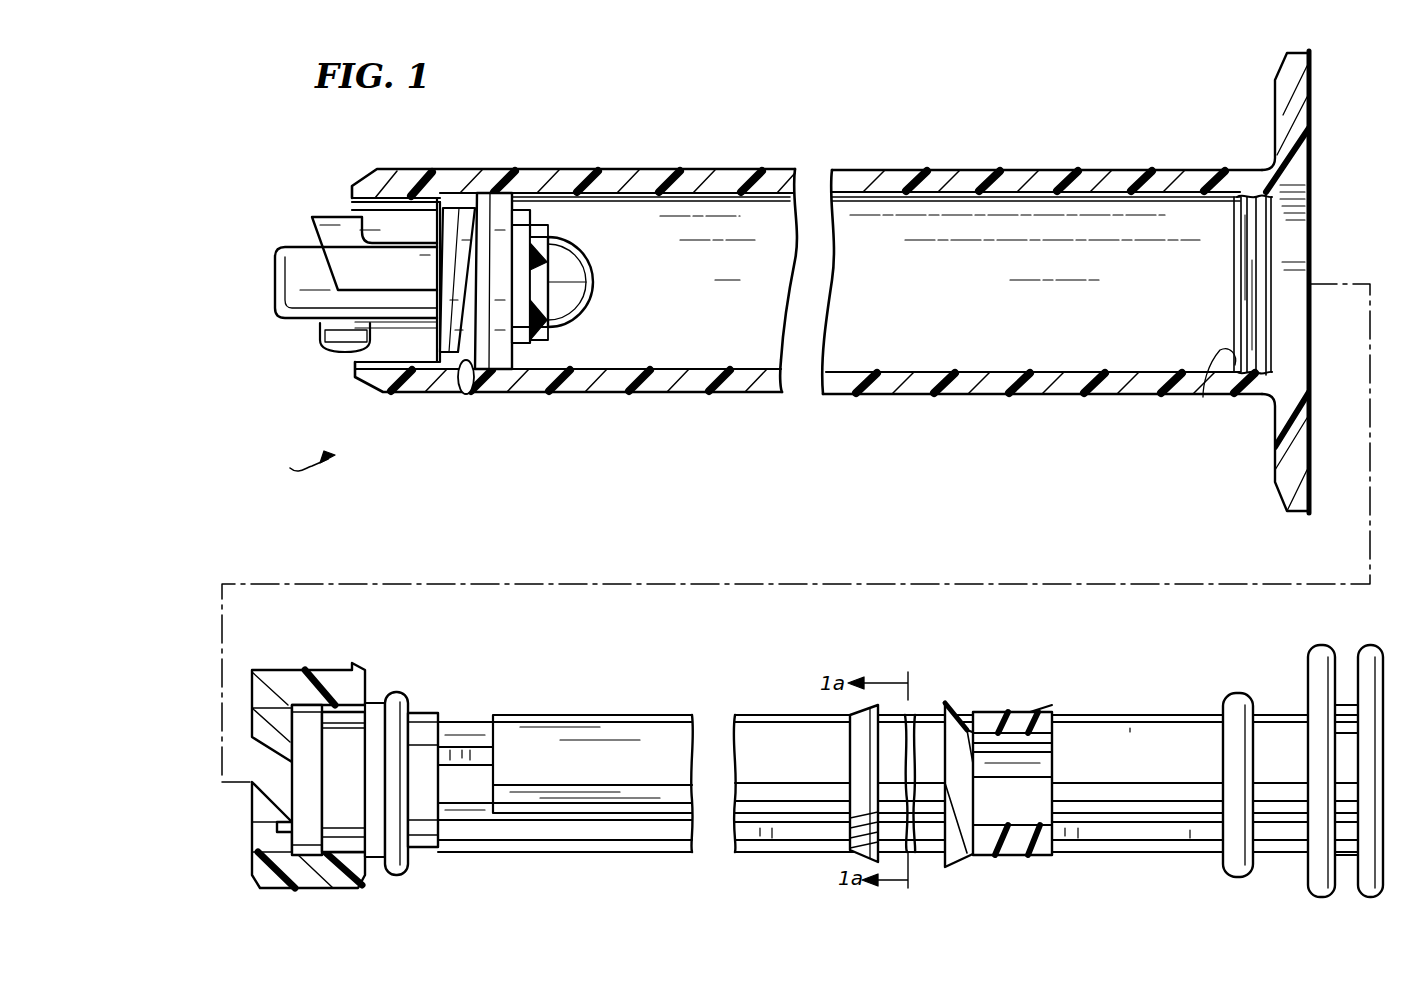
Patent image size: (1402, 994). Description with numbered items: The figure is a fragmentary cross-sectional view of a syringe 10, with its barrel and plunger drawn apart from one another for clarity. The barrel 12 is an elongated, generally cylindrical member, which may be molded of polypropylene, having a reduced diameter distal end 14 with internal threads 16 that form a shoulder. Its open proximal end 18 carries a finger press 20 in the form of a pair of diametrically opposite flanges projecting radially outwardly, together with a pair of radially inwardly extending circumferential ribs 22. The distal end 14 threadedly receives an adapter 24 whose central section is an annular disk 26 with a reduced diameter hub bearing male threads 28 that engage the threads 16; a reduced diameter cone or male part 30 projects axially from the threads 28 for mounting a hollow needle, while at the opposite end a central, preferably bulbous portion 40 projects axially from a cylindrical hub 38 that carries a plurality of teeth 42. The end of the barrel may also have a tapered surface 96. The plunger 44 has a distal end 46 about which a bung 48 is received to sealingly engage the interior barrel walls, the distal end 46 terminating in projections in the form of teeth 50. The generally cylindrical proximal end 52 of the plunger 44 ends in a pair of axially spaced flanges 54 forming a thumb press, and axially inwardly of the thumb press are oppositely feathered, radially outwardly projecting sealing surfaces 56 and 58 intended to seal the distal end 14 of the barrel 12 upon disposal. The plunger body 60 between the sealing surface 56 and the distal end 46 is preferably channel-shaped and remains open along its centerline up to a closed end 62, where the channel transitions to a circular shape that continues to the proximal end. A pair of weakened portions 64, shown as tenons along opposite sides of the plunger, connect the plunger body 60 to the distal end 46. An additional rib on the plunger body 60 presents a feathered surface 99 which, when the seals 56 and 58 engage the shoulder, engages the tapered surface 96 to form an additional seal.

The syringe 10 is at (296, 463).
The barrel 12 is at (893, 395).
The distal end 14 is at (450, 392).
The internal threads 16 is at (470, 393).
The proximal end 18 is at (1245, 170).
The finger press 20 is at (1310, 92).
The circumferential ribs 22 is at (1203, 397).
The adapter 24 is at (573, 326).
The annular disk 26 is at (498, 210).
The male threads 28 is at (447, 242).
The male part 30 is at (303, 308).
The hub 38 is at (528, 233).
The bulbous portion 40 is at (593, 267).
The teeth 42 is at (590, 282).
The plunger 44 is at (655, 718).
The distal end 46 is at (375, 700).
The bung 48 is at (340, 700).
The teeth 50 is at (285, 700).
The proximal end 52 is at (1277, 712).
The flanges 54 is at (1370, 648).
The sealing surface 56 is at (955, 705).
The sealing surface 58 is at (850, 712).
The plunger body 60 is at (552, 737).
The closed end 62 is at (972, 795).
The weakened portions 64 is at (460, 722).
The tapered surface 96 is at (340, 378).
The feathered surface 99 is at (1050, 704).